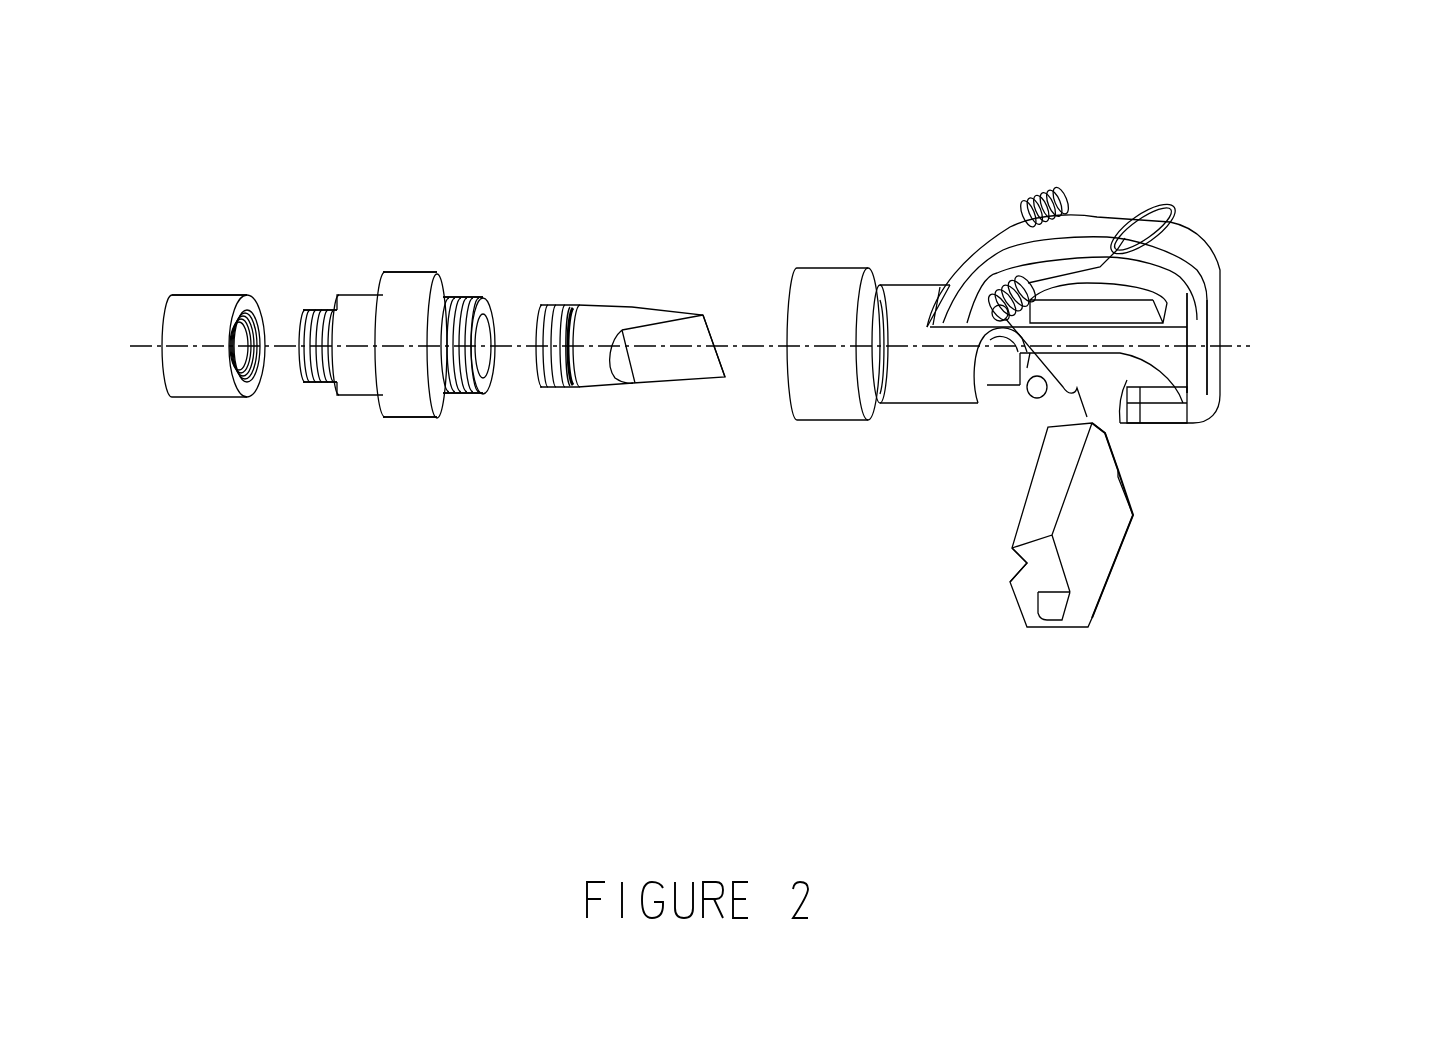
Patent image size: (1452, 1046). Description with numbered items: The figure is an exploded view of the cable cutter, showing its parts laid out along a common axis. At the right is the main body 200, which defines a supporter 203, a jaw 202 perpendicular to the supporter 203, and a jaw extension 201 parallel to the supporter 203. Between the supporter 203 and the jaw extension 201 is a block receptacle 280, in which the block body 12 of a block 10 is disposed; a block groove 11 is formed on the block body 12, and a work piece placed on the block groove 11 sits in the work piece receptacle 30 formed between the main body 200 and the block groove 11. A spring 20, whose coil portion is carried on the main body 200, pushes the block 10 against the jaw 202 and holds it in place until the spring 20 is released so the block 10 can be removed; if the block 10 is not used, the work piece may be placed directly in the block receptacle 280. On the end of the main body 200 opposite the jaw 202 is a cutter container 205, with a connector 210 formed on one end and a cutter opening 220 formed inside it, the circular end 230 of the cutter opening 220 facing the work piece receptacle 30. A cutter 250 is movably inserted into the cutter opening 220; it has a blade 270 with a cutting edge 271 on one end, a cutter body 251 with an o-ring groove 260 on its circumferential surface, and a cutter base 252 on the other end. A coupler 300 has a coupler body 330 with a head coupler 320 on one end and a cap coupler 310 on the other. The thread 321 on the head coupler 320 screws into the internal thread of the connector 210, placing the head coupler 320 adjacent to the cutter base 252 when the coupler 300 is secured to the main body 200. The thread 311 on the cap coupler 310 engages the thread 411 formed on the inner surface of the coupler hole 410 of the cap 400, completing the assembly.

The block 10 is at (1023, 576).
The block groove 11 is at (956, 608).
The block body 12 is at (1198, 523).
The spring 20 is at (1192, 176).
The work piece receptacle 30 is at (1152, 374).
The main body 200 is at (1064, 256).
The jaw extension 201 is at (1234, 435).
The jaw 202 is at (1295, 329).
The supporter 203 is at (1226, 255).
The cutter container 205 is at (847, 454).
The connector 210 is at (787, 420).
The cutter opening 220 is at (961, 418).
The circular end 230 is at (971, 467).
The cutter 250 is at (691, 239).
The cutter body 251 is at (619, 277).
The cutter base 252 is at (565, 403).
The o-ring groove 260 is at (655, 417).
The blade 270 is at (694, 391).
The cutting edge 271 is at (791, 268).
The block receptacle 280 is at (1221, 374).
The coupler 300 is at (432, 255).
The cap coupler 310 is at (390, 485).
The thread 311 is at (369, 276).
The head coupler 320 is at (510, 424).
The thread 321 is at (509, 280).
The coupler body 330 is at (455, 439).
The cap 400 is at (239, 244).
The coupler hole 410 is at (234, 420).
The thread 411 is at (298, 257).